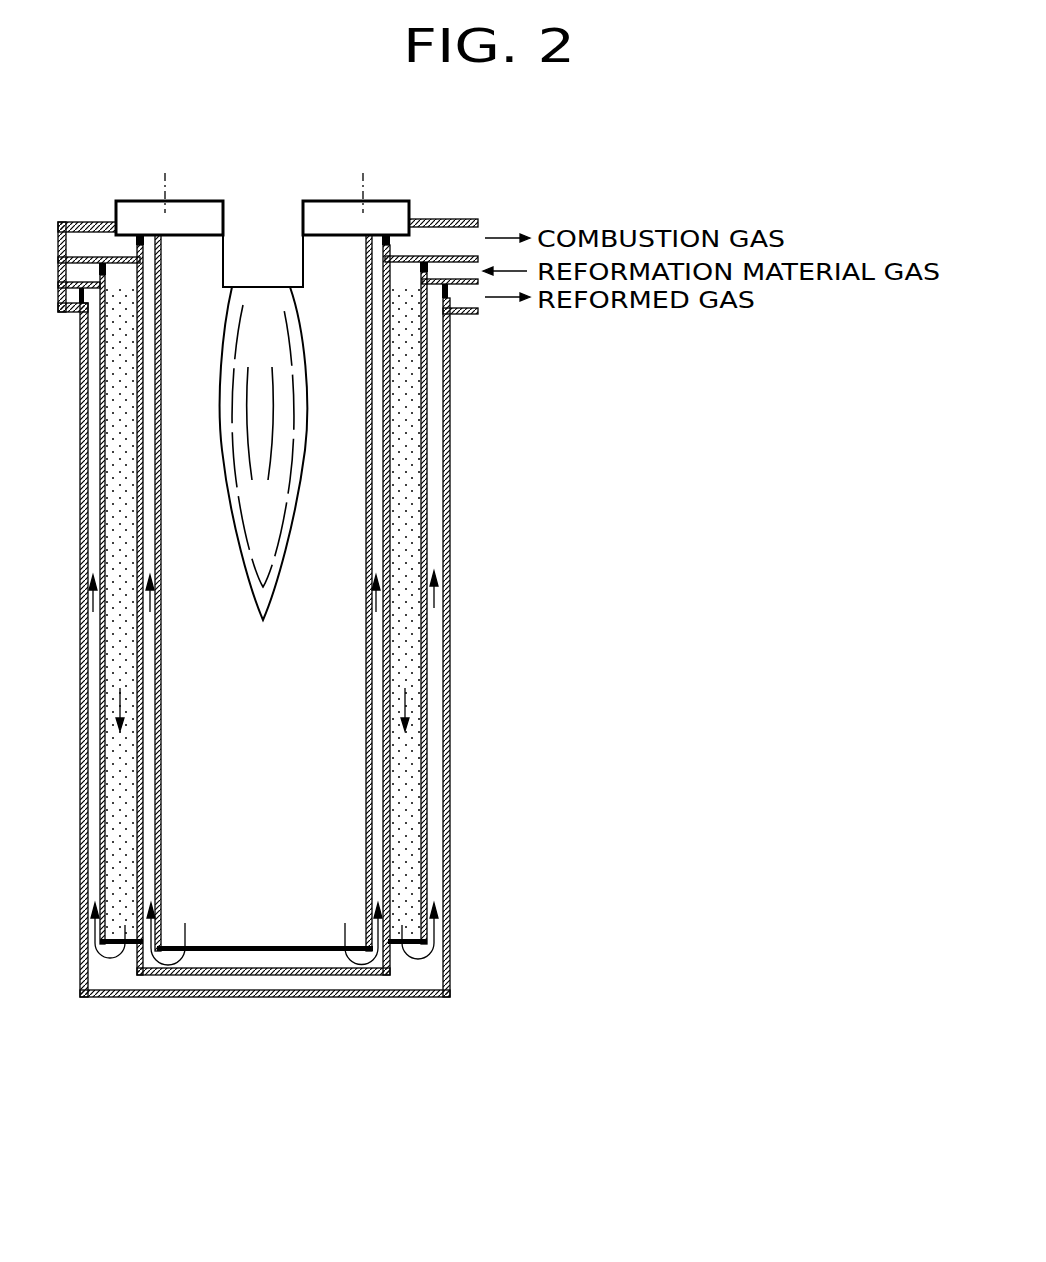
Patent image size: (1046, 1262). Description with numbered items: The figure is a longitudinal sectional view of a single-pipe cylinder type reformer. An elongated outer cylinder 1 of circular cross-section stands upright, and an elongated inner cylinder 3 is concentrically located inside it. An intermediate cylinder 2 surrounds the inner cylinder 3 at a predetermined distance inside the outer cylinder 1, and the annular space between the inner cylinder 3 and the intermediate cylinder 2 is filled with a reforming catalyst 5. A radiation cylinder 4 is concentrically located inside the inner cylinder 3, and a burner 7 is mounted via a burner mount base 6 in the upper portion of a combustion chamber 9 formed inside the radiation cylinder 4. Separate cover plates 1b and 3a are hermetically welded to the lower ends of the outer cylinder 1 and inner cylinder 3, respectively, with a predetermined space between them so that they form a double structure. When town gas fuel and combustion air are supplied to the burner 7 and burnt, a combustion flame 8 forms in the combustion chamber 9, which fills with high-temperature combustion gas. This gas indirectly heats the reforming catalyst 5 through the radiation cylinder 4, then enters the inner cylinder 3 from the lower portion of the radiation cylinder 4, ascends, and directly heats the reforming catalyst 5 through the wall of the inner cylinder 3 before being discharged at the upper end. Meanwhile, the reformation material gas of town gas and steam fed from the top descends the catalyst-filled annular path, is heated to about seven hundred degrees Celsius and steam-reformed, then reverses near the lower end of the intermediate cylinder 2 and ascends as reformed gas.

The outer cylinder 1 is at (450, 630).
The cover plate 1b is at (277, 997).
The intermediate cylinder 2 is at (425, 702).
The inner cylinder 3 is at (369, 762).
The cover plate 3a is at (212, 975).
The radiation cylinder 4 is at (367, 490).
The reforming catalyst 5 is at (403, 565).
The burner mount base 6 is at (393, 215).
The burner 7 is at (276, 267).
The combustion flame 8 is at (307, 443).
The combustion chamber 9 is at (338, 403).